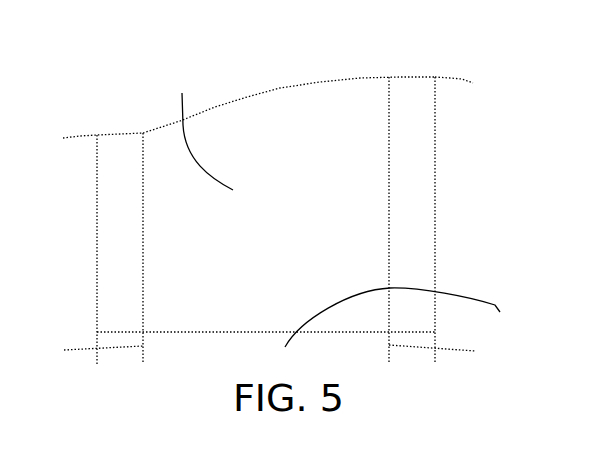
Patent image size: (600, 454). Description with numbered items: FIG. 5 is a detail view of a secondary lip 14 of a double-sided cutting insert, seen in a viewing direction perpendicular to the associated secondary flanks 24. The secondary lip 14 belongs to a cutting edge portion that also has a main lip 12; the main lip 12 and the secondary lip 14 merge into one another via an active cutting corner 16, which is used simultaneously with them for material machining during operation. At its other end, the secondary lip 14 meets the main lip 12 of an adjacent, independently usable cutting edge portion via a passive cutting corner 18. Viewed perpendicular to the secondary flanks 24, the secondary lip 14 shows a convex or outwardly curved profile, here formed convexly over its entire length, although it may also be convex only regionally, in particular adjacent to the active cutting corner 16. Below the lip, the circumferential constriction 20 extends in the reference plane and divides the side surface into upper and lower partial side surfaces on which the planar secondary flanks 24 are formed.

The main lip 12 is at (69, 137).
The secondary lip 14 is at (247, 97).
The active cutting corner 16 is at (408, 78).
The passive cutting corner 18 is at (121, 136).
The constriction 20 is at (405, 317).
The secondary flanks 24 is at (266, 199).